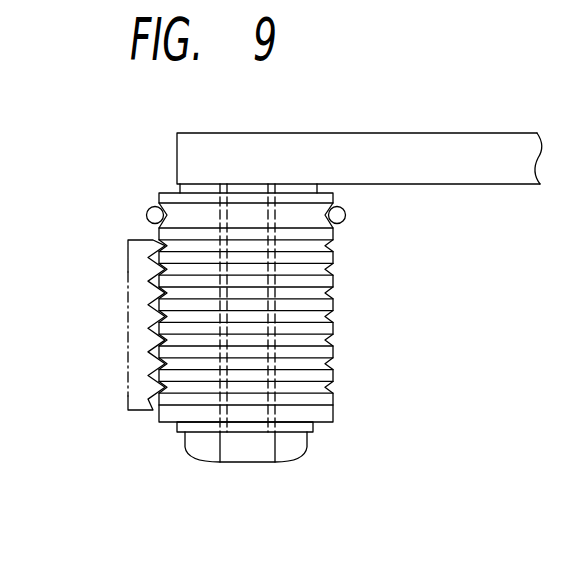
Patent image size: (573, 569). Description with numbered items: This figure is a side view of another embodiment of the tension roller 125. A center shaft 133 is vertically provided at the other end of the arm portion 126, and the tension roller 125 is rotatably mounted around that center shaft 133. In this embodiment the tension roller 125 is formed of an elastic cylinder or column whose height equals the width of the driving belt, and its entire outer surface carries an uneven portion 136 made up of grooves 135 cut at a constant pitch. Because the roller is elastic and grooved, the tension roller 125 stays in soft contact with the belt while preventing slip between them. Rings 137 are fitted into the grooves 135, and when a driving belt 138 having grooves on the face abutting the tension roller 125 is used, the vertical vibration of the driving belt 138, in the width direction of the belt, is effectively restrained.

The tension roller 125 is at (148, 192).
The arm portion 126 is at (428, 145).
The center shaft 133 is at (228, 417).
The grooves 135 is at (340, 252).
The uneven portion 136 is at (343, 227).
The rings 137 is at (146, 214).
The driving belt 138 is at (128, 355).